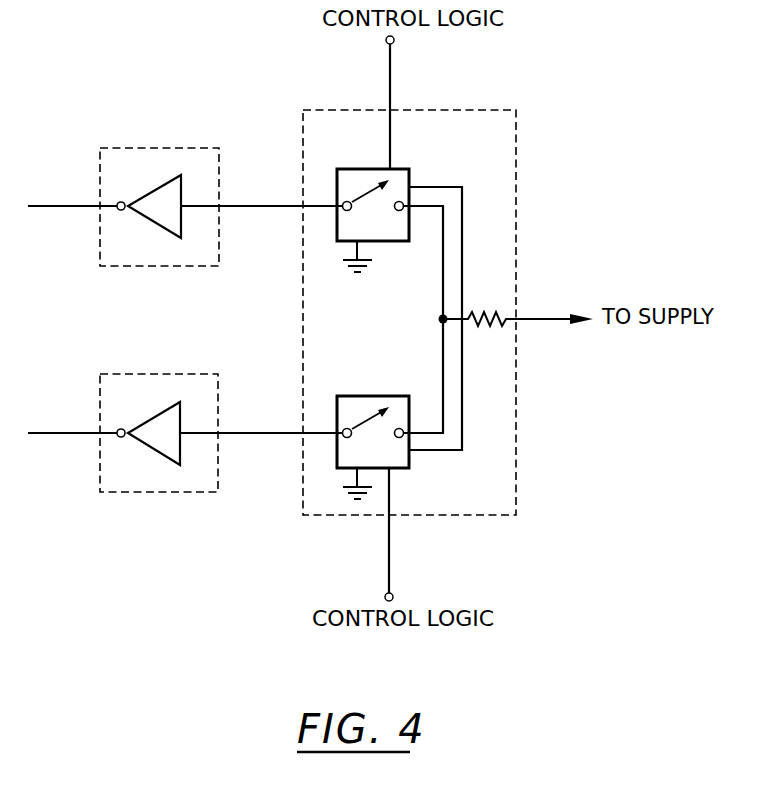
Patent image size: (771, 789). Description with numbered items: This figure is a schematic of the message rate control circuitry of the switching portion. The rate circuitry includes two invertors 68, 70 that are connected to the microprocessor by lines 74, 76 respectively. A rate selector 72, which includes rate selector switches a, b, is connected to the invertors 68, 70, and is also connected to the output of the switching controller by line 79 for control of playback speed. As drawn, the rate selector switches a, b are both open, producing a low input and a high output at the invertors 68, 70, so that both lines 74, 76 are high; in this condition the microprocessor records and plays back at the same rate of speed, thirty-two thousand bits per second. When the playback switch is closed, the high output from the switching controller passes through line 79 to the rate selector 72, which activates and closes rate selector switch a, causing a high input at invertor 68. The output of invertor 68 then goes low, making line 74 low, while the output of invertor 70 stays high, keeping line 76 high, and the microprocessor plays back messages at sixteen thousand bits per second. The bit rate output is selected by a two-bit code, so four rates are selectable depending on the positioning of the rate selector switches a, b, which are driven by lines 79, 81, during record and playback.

The invertor 68 is at (176, 148).
The invertor 70 is at (175, 374).
The rate selector 72 is at (471, 108).
The line 74 is at (50, 204).
The line 76 is at (50, 430).
The line 79 is at (392, 77).
The line 81 is at (391, 553).
The rate selector switch a is at (401, 169).
The rate selector switch b is at (394, 396).